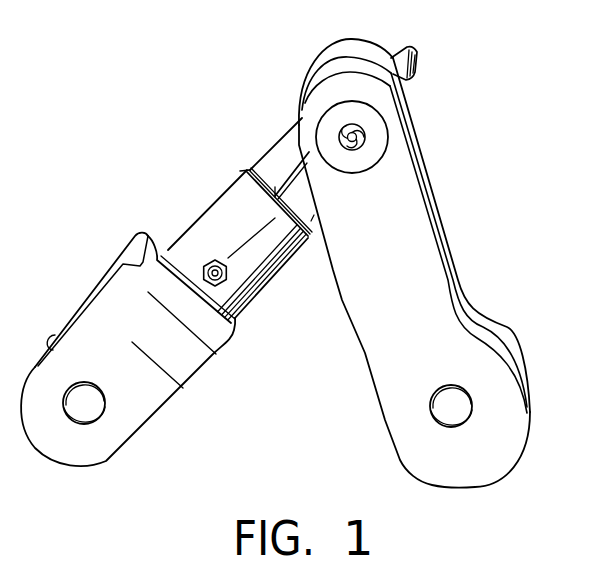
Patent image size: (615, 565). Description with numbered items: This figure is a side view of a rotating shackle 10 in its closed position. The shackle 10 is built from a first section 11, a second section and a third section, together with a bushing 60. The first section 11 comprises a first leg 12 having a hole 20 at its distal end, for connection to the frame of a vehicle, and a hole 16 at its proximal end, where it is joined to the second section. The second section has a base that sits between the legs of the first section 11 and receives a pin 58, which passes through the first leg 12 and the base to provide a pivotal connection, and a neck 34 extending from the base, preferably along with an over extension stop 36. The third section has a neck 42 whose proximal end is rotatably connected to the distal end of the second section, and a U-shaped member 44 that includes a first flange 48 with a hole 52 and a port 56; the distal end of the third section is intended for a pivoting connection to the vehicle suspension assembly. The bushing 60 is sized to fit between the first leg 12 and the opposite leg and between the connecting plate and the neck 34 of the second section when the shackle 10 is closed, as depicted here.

The rotating shackle 10 is at (77, 164).
The first section 11 is at (432, 214).
The first leg 12 is at (415, 283).
The hole 16 is at (376, 143).
The hole 20 is at (474, 408).
The neck 34 is at (279, 153).
The over extension stop 36 is at (406, 49).
The neck 42 is at (221, 203).
The U-shaped member 44 is at (110, 302).
The first flange 48 is at (147, 403).
The hole 52 is at (90, 418).
The port 56 is at (227, 284).
The pin 58 is at (368, 122).
The bushing 60 is at (312, 221).